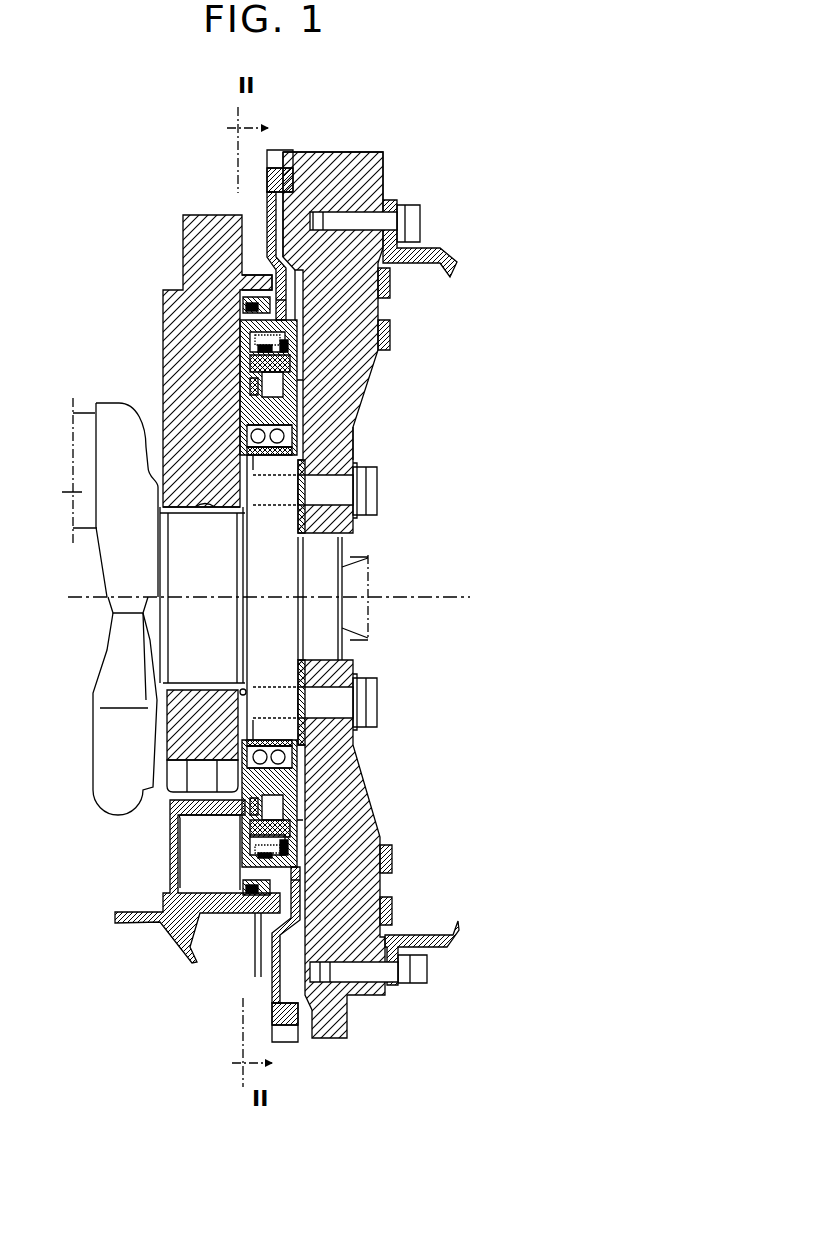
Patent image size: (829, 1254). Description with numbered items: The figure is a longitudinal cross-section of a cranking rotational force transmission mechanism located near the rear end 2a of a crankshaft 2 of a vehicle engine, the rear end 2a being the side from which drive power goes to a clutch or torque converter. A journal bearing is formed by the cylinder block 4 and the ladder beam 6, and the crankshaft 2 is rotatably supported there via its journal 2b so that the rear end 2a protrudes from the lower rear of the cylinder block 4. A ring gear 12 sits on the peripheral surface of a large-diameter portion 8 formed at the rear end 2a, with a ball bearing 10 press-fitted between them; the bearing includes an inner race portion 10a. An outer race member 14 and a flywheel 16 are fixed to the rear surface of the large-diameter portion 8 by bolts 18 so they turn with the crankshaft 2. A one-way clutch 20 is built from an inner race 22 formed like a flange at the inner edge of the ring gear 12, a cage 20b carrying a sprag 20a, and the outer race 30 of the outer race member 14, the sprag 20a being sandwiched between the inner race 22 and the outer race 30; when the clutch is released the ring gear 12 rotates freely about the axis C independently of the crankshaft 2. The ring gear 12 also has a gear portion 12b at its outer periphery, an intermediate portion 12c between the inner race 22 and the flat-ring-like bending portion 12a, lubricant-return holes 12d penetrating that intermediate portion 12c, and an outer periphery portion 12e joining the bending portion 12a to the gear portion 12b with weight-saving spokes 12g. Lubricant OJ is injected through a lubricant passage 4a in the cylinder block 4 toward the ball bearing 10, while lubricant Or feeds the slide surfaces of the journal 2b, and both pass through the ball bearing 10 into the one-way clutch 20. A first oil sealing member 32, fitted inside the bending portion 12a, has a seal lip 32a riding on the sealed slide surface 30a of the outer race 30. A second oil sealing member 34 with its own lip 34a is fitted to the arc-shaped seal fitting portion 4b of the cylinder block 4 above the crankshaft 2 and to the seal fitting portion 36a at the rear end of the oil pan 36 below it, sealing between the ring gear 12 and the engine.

The crankshaft 2 is at (100, 606).
The rear end 2a is at (345, 651).
The journal 2b is at (164, 572).
The cylinder block 4 is at (196, 218).
The lubricant passage 4a is at (236, 462).
The seal fitting portion 4b is at (262, 283).
The ladder beam 6 is at (176, 738).
The large-diameter portion 8 is at (280, 556).
The ball bearing 10 is at (256, 421).
The bearing inner race 10a is at (300, 448).
The ring gear 12 is at (276, 352).
The bending portion 12a is at (270, 320).
The gear portion 12b is at (297, 148).
The intermediate portion 12c is at (245, 832).
The lubricant-return hole 12d is at (243, 873).
The outer periphery portion 12e is at (267, 198).
The spoke 12g is at (306, 198).
The outer race member 14 is at (308, 428).
The flywheel 16 is at (358, 398).
The bolt 18 is at (380, 493).
The one-way clutch 20 is at (296, 412).
The sprag 20a is at (300, 392).
The cage 20b is at (246, 797).
The inner race 22 is at (250, 382).
The outer race 30 is at (292, 372).
The sealed slide surface 30a is at (290, 358).
The first oil sealing member 32 is at (283, 337).
The seal lip 32a is at (258, 341).
The second oil sealing member 34 is at (270, 310).
The seal member lip 34a is at (248, 305).
The oil pan 36 is at (128, 912).
The seal fitting portion 36a is at (255, 914).
The axis C is at (68, 597).
The lubricant Or is at (242, 694).
The lubricant OJ is at (297, 432).